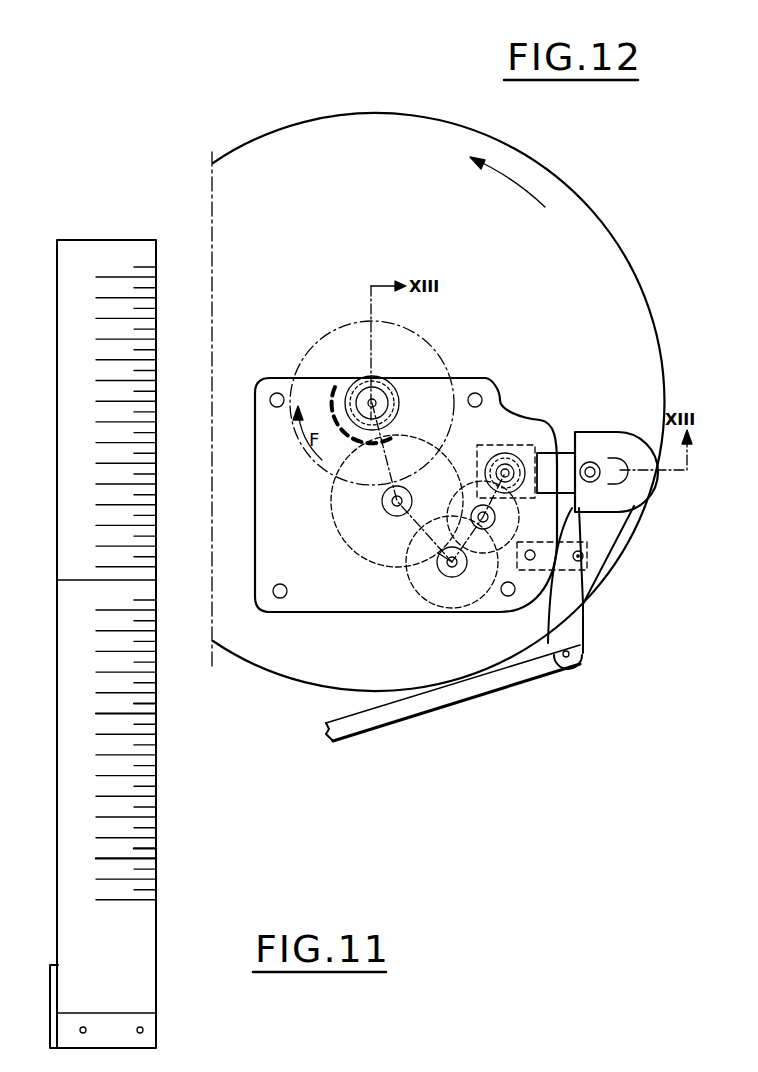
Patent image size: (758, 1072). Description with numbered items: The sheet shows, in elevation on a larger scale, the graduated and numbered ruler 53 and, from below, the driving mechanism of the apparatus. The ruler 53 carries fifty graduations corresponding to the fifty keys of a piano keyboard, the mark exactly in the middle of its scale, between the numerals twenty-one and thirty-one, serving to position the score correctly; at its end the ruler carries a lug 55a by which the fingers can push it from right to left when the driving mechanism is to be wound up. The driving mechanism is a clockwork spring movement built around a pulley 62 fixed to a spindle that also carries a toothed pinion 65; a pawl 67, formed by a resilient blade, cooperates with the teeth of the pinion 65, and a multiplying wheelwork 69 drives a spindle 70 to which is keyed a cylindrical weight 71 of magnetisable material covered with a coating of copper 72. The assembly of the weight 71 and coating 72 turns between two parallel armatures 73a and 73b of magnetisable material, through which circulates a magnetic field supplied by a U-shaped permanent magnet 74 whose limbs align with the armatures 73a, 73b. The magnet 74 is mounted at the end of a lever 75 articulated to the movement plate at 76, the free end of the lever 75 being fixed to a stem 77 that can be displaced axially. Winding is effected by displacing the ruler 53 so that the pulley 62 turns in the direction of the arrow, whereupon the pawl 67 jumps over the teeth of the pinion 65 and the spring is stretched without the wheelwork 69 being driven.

In FIG. 11, the graduated and numbered ruler 53 is at (150, 982).
In FIG. 11, the lug 55a is at (58, 997).
In FIG. 12, the pulley 62 is at (266, 140).
In FIG. 12, the toothed pinion 65 is at (392, 398).
In FIG. 12, the pawl 67 is at (336, 388).
In FIG. 12, the multiplying wheelwork 69 is at (403, 578).
In FIG. 12, the spindle 70 is at (508, 480).
In FIG. 12, the cylindrical weight 71 is at (510, 465).
In FIG. 12, the coating of copper 72 is at (495, 404).
In FIG. 12, the armature 73a is at (625, 527).
In FIG. 12, the armature 73b is at (550, 447).
In FIG. 12, the U-shaped permanent magnet 74 is at (642, 487).
In FIG. 12, the lever 75 is at (568, 623).
In FIG. 12, the articulation 76 is at (584, 558).
In FIG. 12, the stem 77 is at (507, 670).